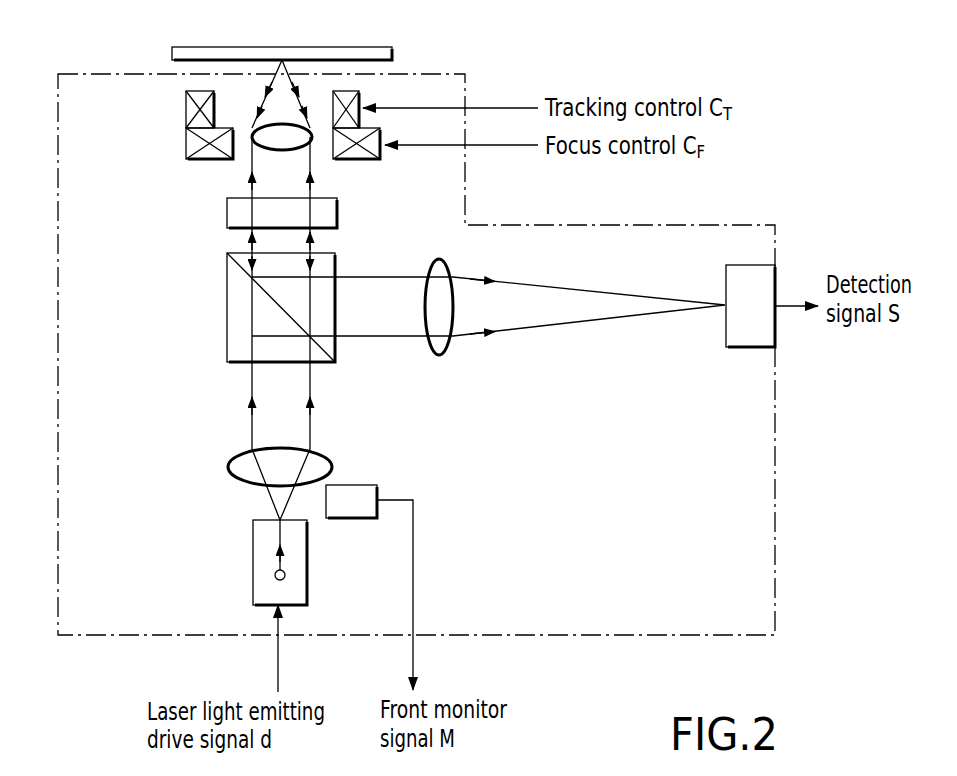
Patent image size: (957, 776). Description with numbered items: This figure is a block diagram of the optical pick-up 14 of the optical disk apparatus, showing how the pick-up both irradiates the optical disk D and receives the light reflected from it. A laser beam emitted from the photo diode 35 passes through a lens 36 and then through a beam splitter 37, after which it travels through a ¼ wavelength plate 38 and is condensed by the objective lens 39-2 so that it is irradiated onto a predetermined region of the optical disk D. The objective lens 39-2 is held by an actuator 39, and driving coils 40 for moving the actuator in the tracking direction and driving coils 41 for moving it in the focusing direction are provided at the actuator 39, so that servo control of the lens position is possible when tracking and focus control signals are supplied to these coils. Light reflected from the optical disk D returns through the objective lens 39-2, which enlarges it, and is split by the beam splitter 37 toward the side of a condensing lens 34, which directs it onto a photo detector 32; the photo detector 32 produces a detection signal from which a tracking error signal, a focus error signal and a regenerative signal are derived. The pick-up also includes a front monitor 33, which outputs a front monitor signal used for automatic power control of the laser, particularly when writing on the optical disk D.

The optical pick-up 14 is at (98, 637).
The photo detector 32 is at (748, 350).
The front monitor 33 is at (353, 520).
The condensing lens 34 is at (438, 357).
The photo diode 35 is at (253, 558).
The lens 36 is at (228, 466).
The beam splitter 37 is at (227, 318).
The ¼ wavelength plate 38 is at (227, 214).
The actuator 39 is at (262, 154).
The objective lens 39-2 is at (283, 146).
The driving coils 40 is at (186, 110).
The driving coils 41 is at (186, 144).
The optical disk D is at (344, 46).